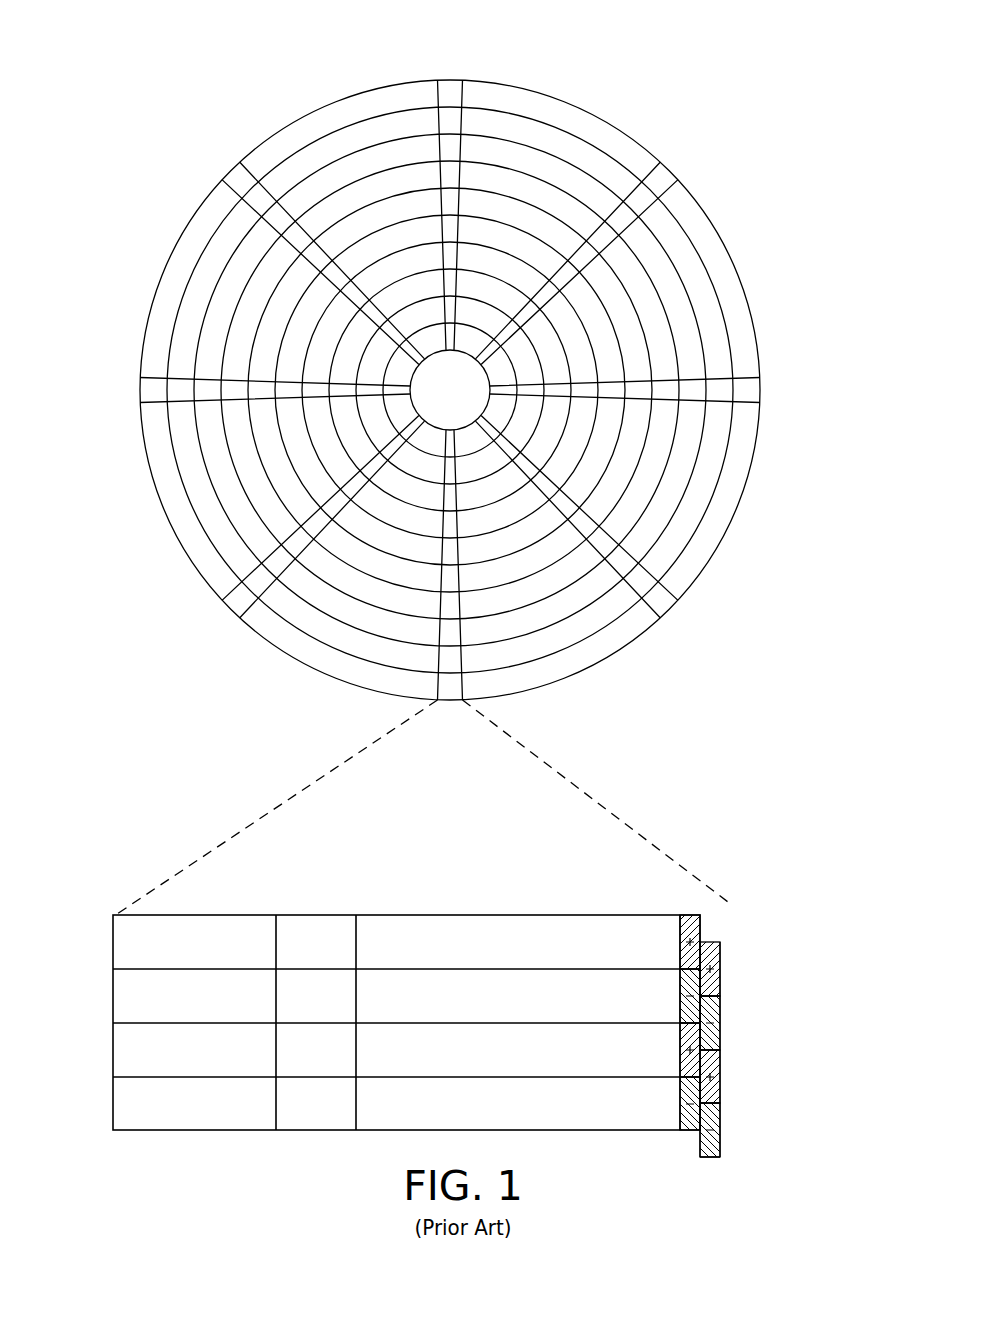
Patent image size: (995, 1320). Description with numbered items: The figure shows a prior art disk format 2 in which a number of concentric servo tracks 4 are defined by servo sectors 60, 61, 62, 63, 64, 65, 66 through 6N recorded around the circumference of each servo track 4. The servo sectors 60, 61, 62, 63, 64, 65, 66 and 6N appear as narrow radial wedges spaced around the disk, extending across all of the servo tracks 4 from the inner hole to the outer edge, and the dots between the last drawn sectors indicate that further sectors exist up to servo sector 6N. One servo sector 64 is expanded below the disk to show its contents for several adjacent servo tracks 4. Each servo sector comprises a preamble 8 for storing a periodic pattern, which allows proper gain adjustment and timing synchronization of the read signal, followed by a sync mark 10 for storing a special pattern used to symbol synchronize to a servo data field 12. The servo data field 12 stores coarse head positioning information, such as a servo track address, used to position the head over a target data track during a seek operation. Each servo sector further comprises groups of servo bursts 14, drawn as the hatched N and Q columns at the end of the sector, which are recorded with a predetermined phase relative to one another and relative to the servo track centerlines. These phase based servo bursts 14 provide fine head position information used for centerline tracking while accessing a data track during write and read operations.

The disk format 2 is at (228, 90).
The servo track 4 is at (578, 126).
The servo sector 60 is at (453, 189).
The servo sector 61 is at (596, 249).
The servo sector 62 is at (656, 394).
The servo sector 63 is at (594, 539).
The servo sector 64 is at (352, 604).
The servo sector 65 is at (307, 539).
The servo sector 66 is at (244, 389).
The servo sector 6N is at (297, 242).
The preamble 8 is at (203, 915).
The sync mark 10 is at (318, 915).
The servo data field 12 is at (507, 915).
The servo bursts 14 is at (712, 918).